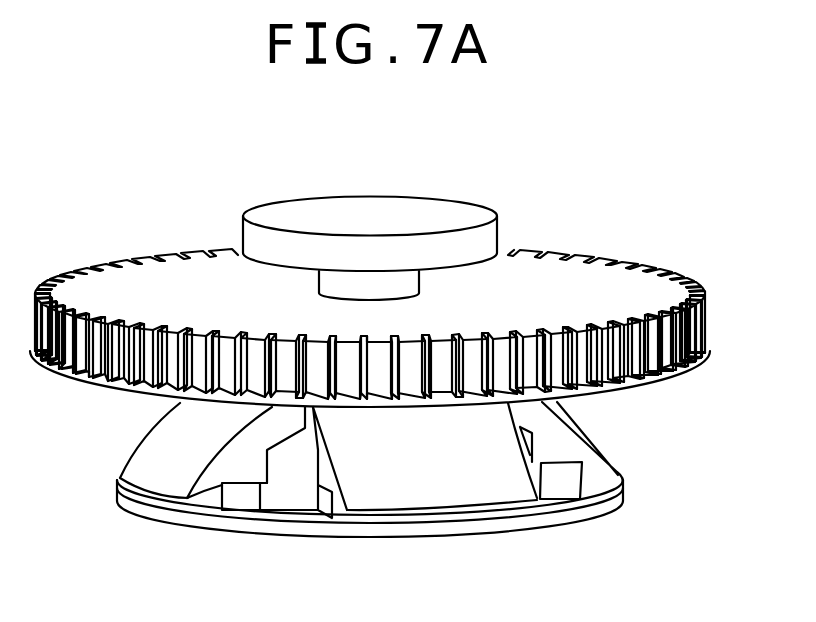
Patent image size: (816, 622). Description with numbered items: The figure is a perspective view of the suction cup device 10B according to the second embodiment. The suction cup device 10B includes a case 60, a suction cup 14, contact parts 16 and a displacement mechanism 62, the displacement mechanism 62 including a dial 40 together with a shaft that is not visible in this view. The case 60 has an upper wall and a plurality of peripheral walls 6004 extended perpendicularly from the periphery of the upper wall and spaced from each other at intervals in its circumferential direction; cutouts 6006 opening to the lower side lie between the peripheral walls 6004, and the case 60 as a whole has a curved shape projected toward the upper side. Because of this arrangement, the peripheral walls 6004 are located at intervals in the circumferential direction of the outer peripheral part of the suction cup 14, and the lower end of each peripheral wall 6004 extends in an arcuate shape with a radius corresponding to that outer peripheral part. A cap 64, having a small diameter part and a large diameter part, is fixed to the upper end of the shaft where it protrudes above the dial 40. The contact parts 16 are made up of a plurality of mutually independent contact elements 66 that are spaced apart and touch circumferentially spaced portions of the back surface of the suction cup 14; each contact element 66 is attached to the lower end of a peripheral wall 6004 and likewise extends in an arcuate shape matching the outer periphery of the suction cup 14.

The suction cup device 10B is at (193, 169).
The suction cup 14 is at (330, 538).
The contact parts 16 is at (562, 482).
The dial 40 is at (650, 290).
The case 60 is at (493, 480).
The displacement mechanism 62 is at (587, 236).
The cap 64 is at (374, 216).
The contact elements 66 is at (235, 502).
The peripheral walls 6004 is at (155, 448).
The cutouts 6006 is at (295, 480).